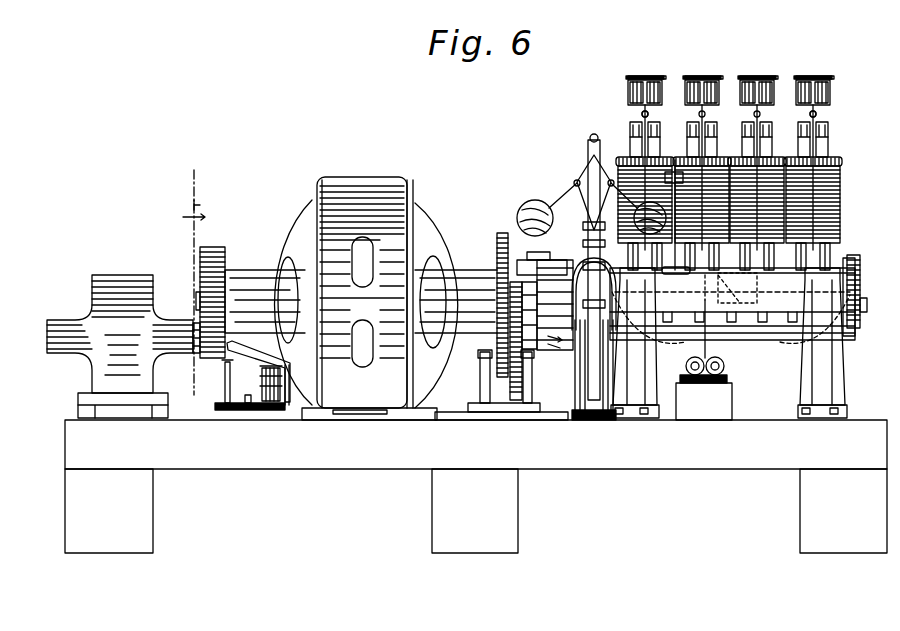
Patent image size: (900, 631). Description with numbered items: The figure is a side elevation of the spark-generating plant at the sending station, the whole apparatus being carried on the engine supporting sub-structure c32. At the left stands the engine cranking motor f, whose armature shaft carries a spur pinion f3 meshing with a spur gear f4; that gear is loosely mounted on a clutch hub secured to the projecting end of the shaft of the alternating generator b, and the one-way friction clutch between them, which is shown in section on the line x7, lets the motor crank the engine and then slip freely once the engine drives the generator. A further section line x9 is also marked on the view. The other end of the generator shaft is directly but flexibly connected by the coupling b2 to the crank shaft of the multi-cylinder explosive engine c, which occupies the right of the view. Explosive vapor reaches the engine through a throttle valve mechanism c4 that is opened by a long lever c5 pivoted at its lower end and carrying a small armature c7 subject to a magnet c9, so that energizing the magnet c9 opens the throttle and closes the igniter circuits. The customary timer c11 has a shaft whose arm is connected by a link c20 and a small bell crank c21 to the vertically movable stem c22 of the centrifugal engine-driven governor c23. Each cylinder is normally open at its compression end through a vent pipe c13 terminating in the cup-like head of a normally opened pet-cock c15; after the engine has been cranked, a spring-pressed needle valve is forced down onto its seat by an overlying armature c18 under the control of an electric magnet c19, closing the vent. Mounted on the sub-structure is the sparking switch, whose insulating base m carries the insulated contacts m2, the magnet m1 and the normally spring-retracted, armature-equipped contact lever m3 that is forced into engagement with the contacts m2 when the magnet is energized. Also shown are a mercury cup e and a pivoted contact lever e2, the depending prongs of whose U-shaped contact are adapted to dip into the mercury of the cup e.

The engine supporting sub-structure c32 is at (384, 452).
The engine cranking motor f is at (120, 325).
The section line x7 is at (191, 286).
The spur pinion f3 is at (195, 330).
The spur gear f4 is at (227, 253).
The alternating generator b is at (347, 198).
The armature-equipped contact lever m3 is at (247, 349).
The insulated contacts m2 is at (225, 380).
The insulating plate m is at (248, 411).
The magnet m1 is at (288, 402).
The mercury cup e is at (555, 388).
The contact lever e2 is at (566, 346).
The flexible coupling b2 is at (553, 292).
The section line x9 is at (660, 350).
The small bell crank c21 is at (598, 258).
The centrifugal engine-driven governor c23 is at (572, 190).
The multi-cylinder explosive engine c is at (840, 216).
The armature c18 is at (692, 78).
The electric magnet c19 is at (778, 92).
The vent pipe c13 is at (632, 135).
The pet-cock c15 is at (820, 113).
The timer c11 is at (674, 165).
The throttle valve mechanism c4 is at (802, 300).
The link c20 is at (666, 274).
The governor stem c22 is at (732, 303).
The long lever c5 is at (727, 321).
The magnet c9 is at (722, 368).
The small armature c7 is at (726, 385).